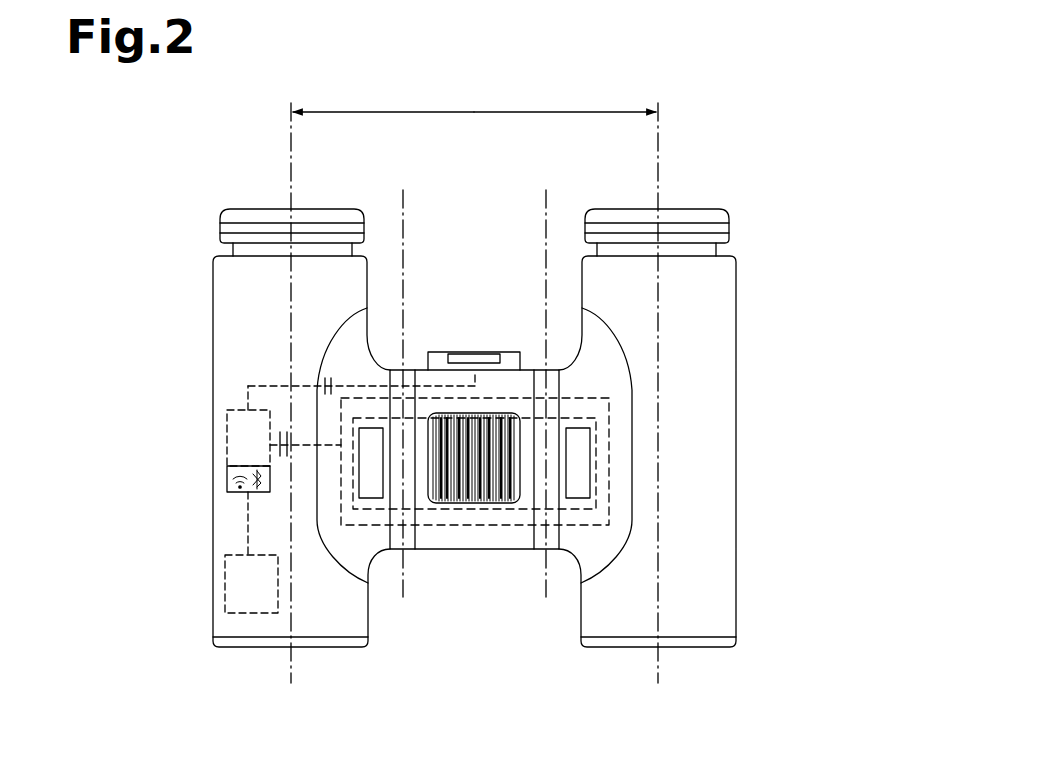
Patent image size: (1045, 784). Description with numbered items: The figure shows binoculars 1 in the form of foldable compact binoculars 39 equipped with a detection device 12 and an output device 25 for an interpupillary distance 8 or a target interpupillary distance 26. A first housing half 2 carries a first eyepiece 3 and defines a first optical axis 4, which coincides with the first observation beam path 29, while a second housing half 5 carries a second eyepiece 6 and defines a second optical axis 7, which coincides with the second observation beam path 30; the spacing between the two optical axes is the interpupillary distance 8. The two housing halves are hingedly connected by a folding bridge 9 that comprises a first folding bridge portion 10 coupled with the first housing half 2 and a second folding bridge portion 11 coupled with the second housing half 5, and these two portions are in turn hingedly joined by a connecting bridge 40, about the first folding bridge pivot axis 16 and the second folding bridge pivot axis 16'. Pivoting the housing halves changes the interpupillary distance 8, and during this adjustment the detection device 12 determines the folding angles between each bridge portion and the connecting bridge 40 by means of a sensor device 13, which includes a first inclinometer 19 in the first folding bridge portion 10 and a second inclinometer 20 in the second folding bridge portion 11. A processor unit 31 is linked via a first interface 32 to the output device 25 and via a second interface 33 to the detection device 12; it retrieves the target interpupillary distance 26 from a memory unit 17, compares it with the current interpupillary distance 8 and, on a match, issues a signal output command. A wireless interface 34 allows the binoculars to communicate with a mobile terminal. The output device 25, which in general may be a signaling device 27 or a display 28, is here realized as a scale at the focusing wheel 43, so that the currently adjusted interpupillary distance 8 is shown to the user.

The binoculars 1 is at (869, 89).
The compact binoculars 39 is at (822, 125).
The first housing half 2 is at (201, 288).
The first eyepiece 3 is at (248, 212).
The first optical axis 4 is at (254, 373).
The first observation beam path 29 is at (288, 139).
The second housing half 5 is at (731, 294).
The second eyepiece 6 is at (648, 214).
The second optical axis 7 is at (709, 372).
The second observation beam path 30 is at (661, 139).
The interpupillary distance 8 is at (474, 84).
The target interpupillary distance 26 is at (483, 111).
The folding bridge 9 is at (504, 577).
The first folding bridge portion 10 is at (370, 551).
The second folding bridge portion 11 is at (573, 544).
The detection device 12 is at (618, 518).
The sensor device 13 is at (610, 414).
The first folding bridge pivot axis 16 is at (592, 370).
The second folding bridge pivot axis 16' is at (449, 370).
The memory unit 17 is at (242, 582).
The first inclinometer 19 is at (373, 476).
The second inclinometer 20 is at (588, 443).
The output device 25 is at (479, 309).
The signaling device 27 is at (479, 309).
The display 28 is at (513, 352).
The processor unit 31 is at (226, 411).
The first interface 32 is at (317, 373).
The second interface 33 is at (281, 427).
The wireless interface 34 is at (227, 475).
The connecting bridge 40 is at (448, 532).
The focusing wheel 43 is at (457, 418).